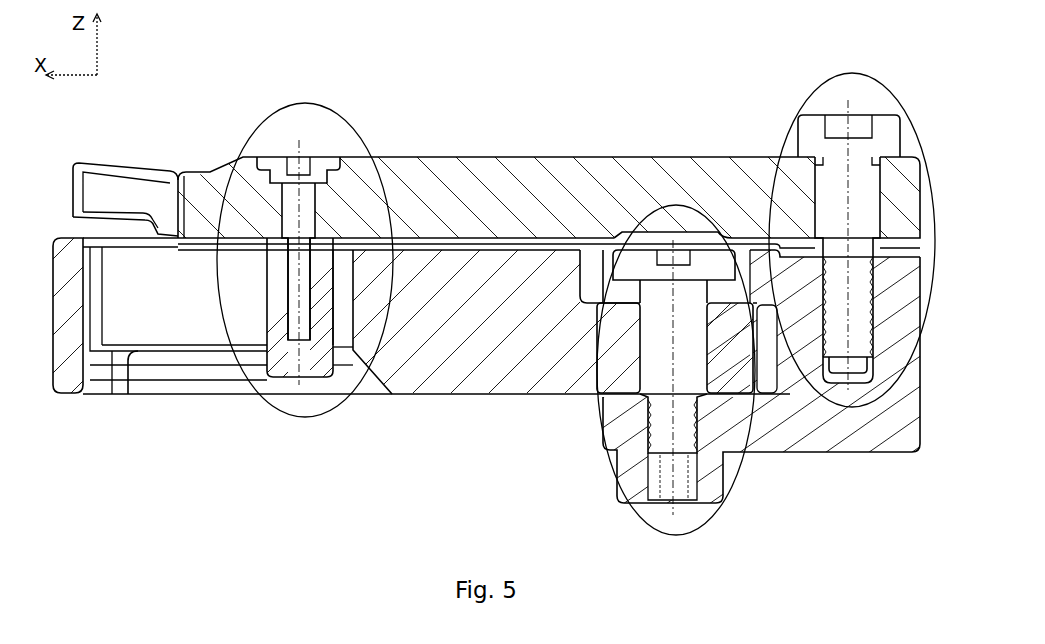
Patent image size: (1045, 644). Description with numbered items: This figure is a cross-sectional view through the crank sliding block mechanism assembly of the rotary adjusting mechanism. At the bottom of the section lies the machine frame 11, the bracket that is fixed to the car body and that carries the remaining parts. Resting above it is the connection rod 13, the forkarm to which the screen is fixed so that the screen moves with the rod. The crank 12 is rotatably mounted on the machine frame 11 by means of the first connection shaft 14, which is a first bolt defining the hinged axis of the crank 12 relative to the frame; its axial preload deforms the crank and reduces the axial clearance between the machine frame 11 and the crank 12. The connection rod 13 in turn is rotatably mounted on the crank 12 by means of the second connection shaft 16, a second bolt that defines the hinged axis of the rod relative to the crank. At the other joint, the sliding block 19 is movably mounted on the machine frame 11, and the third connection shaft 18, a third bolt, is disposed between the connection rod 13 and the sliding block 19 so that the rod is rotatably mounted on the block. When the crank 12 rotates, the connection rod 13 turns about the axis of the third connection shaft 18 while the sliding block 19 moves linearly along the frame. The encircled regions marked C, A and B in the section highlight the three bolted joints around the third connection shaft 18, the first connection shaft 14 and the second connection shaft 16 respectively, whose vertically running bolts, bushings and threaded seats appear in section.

The machine frame 11 is at (460, 378).
The crank 12 is at (838, 437).
The connection rod 13 is at (533, 182).
The first connection shaft 14 is at (658, 362).
The second connection shaft 16 is at (817, 130).
The third connection shaft 18 is at (278, 157).
The sliding block 19 is at (285, 375).
The detail region A is at (650, 527).
The screen B is at (910, 122).
The detail region C is at (370, 118).